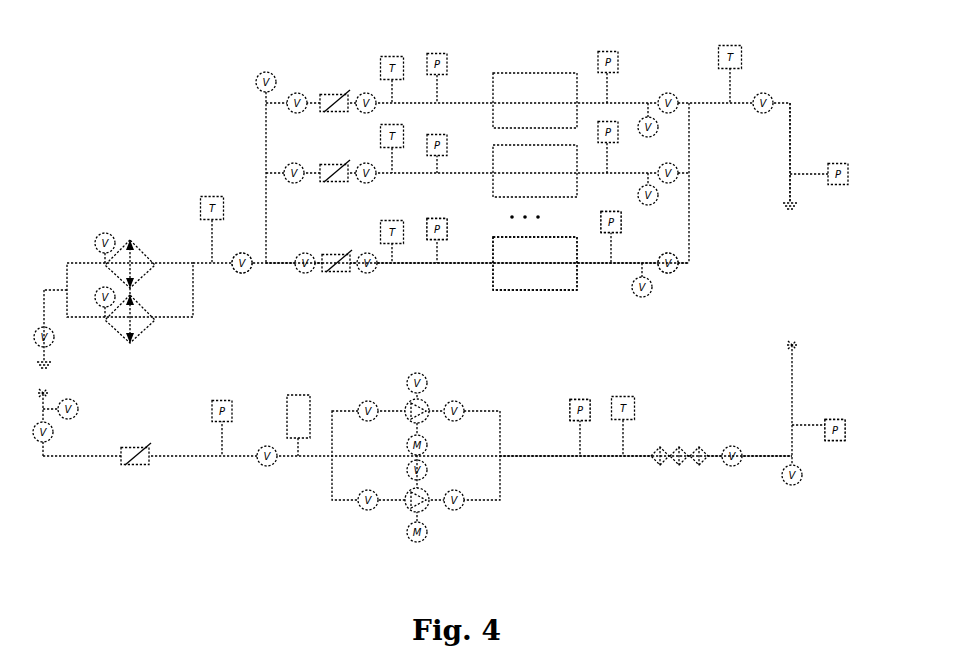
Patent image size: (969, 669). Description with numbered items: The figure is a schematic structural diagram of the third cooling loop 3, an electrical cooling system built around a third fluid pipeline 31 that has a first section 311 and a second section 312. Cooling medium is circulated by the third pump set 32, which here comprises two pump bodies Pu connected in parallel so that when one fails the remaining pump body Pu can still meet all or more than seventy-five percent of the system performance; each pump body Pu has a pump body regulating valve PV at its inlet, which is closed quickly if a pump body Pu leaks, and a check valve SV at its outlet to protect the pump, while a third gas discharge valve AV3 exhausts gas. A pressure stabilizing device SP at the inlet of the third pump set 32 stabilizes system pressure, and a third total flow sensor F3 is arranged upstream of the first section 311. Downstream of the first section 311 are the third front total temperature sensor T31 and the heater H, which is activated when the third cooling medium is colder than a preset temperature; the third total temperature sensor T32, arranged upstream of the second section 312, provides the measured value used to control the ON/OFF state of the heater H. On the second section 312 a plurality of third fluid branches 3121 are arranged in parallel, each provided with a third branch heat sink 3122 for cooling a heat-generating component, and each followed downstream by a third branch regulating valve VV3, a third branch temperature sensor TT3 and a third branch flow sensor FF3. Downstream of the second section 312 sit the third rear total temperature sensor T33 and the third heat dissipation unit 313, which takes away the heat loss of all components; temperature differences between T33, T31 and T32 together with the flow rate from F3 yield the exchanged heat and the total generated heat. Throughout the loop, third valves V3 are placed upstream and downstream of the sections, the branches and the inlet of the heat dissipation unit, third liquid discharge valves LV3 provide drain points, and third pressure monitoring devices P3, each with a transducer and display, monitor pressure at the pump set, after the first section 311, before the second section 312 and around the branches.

The third cooling loop 3 is at (499, 42).
The third fluid pipeline 31 is at (728, 325).
The third pump set 32 is at (409, 456).
The first section 311 is at (553, 470).
The second section 312 is at (797, 88).
The third heat dissipation unit 313 is at (168, 330).
The third fluid branch 3121 is at (492, 110).
The third branch heat sink 3122 is at (535, 290).
The third front total temperature sensor T31 is at (632, 428).
The third total temperature sensor T32 is at (735, 92).
The third rear total temperature sensor T33 is at (205, 228).
The third branch temperature sensor TT3 is at (378, 236).
The third pressure monitoring device P3 is at (437, 255).
The third valve V3 is at (302, 253).
The third gas discharge valve AV3 is at (257, 78).
The third liquid discharge valve LV3 is at (634, 296).
The third branch flow sensor FF3 is at (330, 272).
The third branch regulating valve VV3 is at (367, 274).
The third total flow sensor F3 is at (128, 465).
The pressure stabilizing device SP is at (312, 410).
The pump body Pu is at (407, 400).
The pump body regulating valve PV is at (362, 508).
The check valve SV is at (462, 508).
The heater H is at (690, 446).